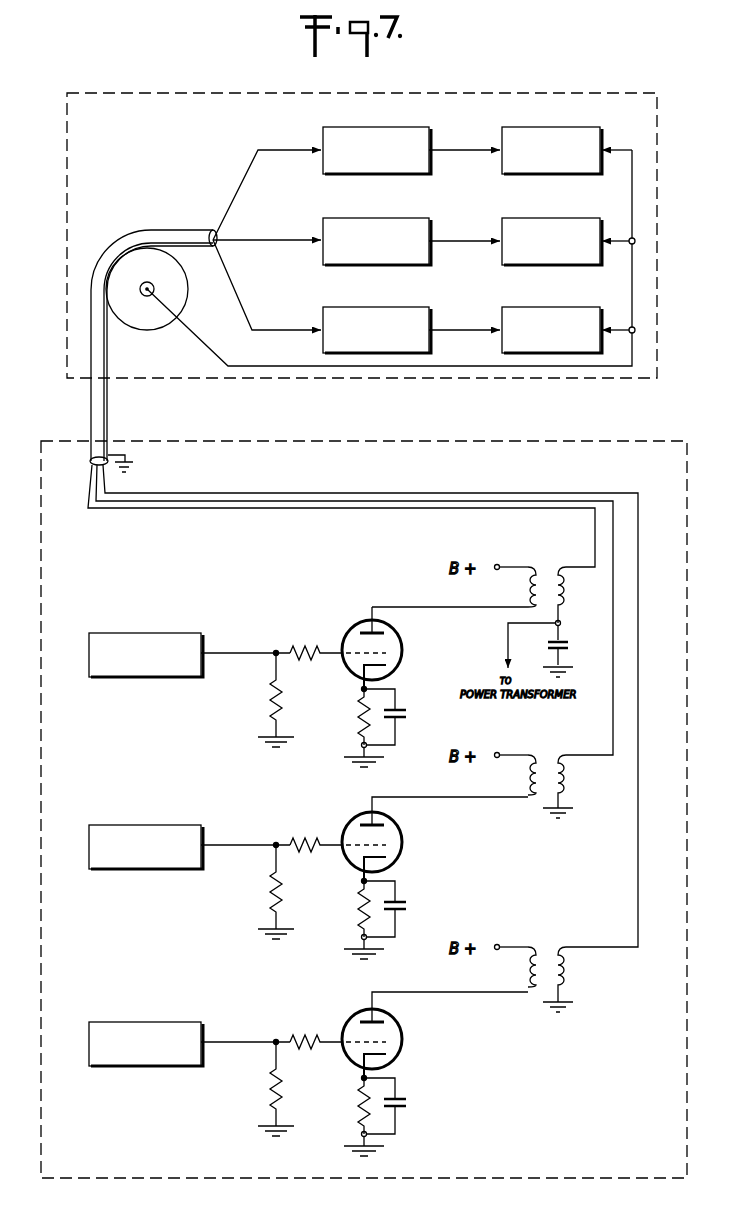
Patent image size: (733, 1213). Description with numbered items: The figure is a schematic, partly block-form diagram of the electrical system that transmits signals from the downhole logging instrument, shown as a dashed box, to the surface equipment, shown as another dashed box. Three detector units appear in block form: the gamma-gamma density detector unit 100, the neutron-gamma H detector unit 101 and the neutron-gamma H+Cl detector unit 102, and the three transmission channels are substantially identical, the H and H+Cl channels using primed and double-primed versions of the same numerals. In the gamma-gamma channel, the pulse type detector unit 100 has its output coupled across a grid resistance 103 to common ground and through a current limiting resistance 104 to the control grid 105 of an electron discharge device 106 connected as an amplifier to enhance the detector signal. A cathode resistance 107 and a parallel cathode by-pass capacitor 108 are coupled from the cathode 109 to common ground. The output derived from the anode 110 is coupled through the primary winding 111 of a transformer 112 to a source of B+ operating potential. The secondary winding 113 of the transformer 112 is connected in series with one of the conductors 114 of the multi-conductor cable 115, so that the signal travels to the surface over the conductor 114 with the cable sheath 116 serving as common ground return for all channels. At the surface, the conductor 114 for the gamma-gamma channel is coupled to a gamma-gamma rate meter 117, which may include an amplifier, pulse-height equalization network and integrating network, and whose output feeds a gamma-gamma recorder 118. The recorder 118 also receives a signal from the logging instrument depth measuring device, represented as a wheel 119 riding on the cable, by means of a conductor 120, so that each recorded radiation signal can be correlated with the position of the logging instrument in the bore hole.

The gamma-gamma density detector unit 100 is at (143, 633).
The neutron-gamma H detector unit 101 is at (146, 831).
The neutron-gamma H+Cl detector unit 102 is at (146, 1028).
The grid resistance 103 is at (257, 700).
The current limiting resistance 104 is at (312, 638).
The control grid 105 is at (396, 648).
The electron discharge device 106 is at (359, 637).
The cathode resistance 107 is at (338, 717).
The cathode by-pass capacitor 108 is at (403, 713).
The cathode 109 is at (403, 675).
The anode 110 is at (403, 621).
The primary winding 111 is at (509, 587).
The transformer 112 is at (545, 580).
The secondary winding 113 is at (582, 595).
The conductor 114 is at (341, 514).
The multi-conductor cable 115 is at (86, 402).
The cable sheath 116 is at (109, 456).
The gamma-gamma rate meter 117 is at (377, 138).
The gamma-gamma recorder 118 is at (552, 137).
The wheel 119 is at (178, 298).
The conductor 120 is at (258, 366).